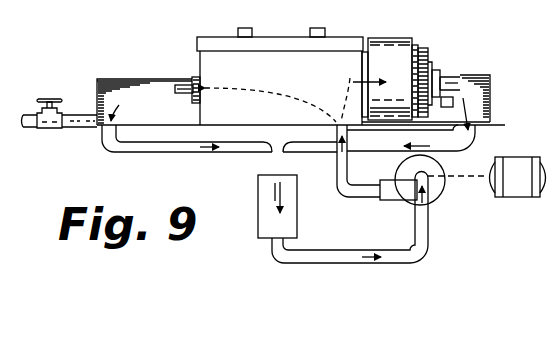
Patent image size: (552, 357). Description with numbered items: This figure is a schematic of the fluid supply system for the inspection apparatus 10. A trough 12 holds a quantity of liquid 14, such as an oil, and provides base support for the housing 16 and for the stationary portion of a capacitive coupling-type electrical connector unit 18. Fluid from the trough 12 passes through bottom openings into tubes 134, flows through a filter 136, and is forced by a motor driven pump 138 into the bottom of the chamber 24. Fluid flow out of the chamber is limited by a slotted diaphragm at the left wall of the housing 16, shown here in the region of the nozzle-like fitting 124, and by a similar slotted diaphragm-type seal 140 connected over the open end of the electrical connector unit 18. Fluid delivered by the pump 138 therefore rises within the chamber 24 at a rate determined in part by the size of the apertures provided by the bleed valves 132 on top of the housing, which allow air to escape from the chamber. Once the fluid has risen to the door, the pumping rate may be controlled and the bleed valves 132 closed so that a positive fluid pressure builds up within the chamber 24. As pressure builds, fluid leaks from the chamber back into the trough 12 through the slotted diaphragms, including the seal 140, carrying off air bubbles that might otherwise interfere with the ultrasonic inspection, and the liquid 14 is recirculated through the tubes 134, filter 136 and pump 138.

The apparatus 10 is at (133, 50).
The trough 12 is at (97, 78).
The liquid 14 is at (218, 51).
The housing 16 is at (264, 39).
The electrical connector unit 18 is at (391, 32).
The chamber 24 is at (306, 46).
The nozzle 124 is at (185, 76).
The bleed valves 132 is at (245, 28).
The tubes 134 is at (136, 154).
The filter 136 is at (260, 204).
The motor driven pump 138 is at (408, 196).
The slotted diaphragm-type seal 140 is at (449, 69).